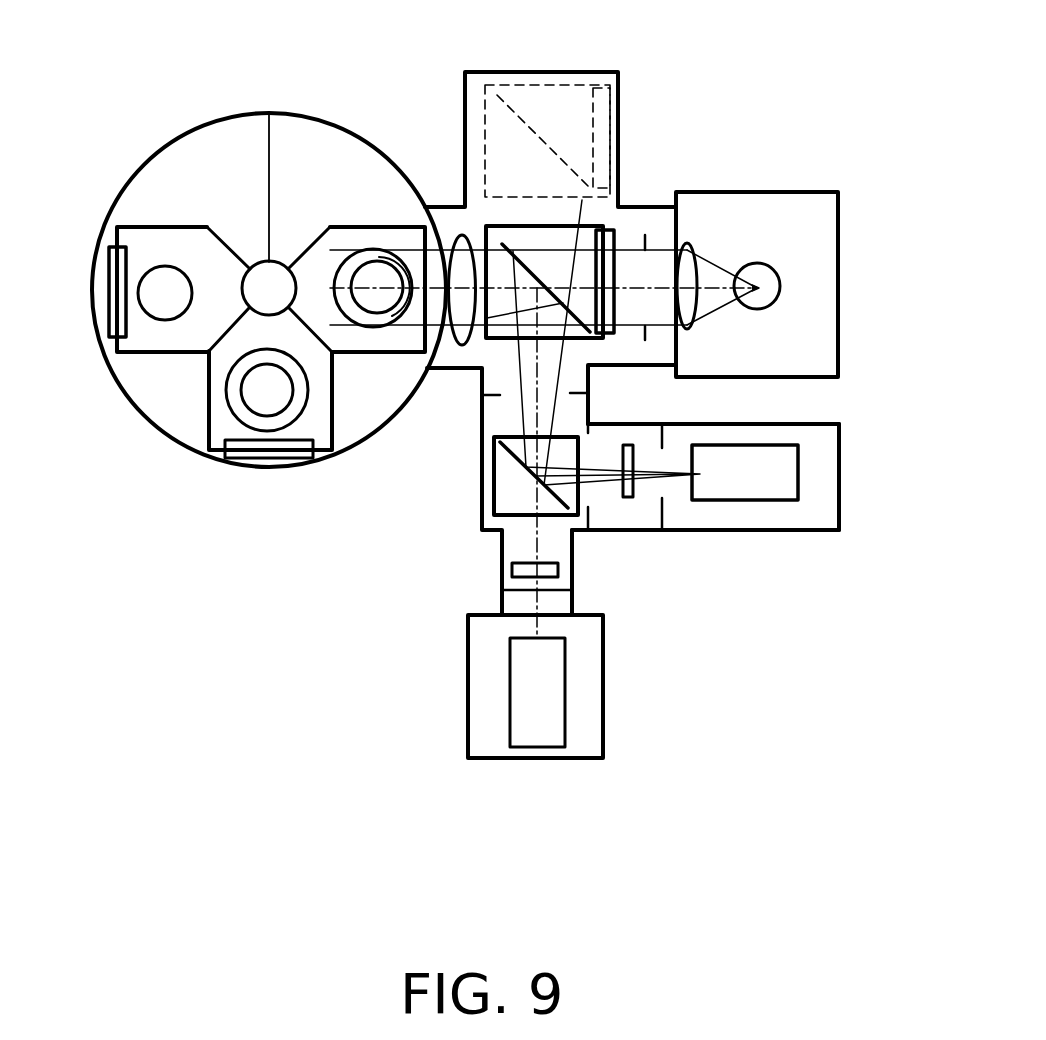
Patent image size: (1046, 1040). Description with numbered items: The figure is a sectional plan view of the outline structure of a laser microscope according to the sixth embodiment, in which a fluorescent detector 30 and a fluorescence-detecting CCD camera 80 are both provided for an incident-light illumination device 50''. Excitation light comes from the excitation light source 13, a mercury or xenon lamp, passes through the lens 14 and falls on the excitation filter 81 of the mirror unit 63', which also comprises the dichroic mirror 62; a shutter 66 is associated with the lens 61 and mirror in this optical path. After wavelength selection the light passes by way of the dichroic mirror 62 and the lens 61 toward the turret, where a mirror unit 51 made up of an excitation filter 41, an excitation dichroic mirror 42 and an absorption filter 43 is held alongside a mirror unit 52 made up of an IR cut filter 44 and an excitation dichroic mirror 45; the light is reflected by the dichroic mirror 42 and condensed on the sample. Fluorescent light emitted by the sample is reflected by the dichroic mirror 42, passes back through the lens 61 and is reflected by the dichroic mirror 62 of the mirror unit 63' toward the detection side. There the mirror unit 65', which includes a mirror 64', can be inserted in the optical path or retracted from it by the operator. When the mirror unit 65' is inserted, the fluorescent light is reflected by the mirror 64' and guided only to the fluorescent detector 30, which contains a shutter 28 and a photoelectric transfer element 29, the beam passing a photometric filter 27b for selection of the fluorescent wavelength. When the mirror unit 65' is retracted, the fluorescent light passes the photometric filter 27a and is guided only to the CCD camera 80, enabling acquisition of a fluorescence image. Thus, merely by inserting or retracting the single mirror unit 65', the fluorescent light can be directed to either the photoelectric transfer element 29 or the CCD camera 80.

The excitation light source 13 is at (840, 268).
The lens 14 is at (689, 245).
The photometric filter 27a is at (512, 568).
The photometric filter 27b is at (628, 500).
The shutter 28 is at (662, 516).
The photoelectric transfer element 29 is at (740, 501).
The fluorescent detector 30 is at (840, 491).
The excitation filter 41 is at (242, 452).
The excitation dichroic mirror 42 is at (388, 256).
The absorption filter 43 is at (383, 270).
The IR cut filter 44 is at (113, 299).
The excitation dichroic mirror 45 is at (160, 307).
The incident-light illumination device 50'' is at (632, 343).
The mirror unit 51 is at (362, 222).
The mirror unit 52 is at (150, 358).
The lens 61 is at (460, 347).
The dichroic mirror 62 is at (598, 225).
The mirror unit 63' is at (589, 215).
The mirror 64' is at (491, 476).
The mirror unit 65' is at (494, 497).
The shutter 66 is at (648, 335).
The CCD camera 80 is at (604, 664).
The excitation filter 81 is at (608, 229).